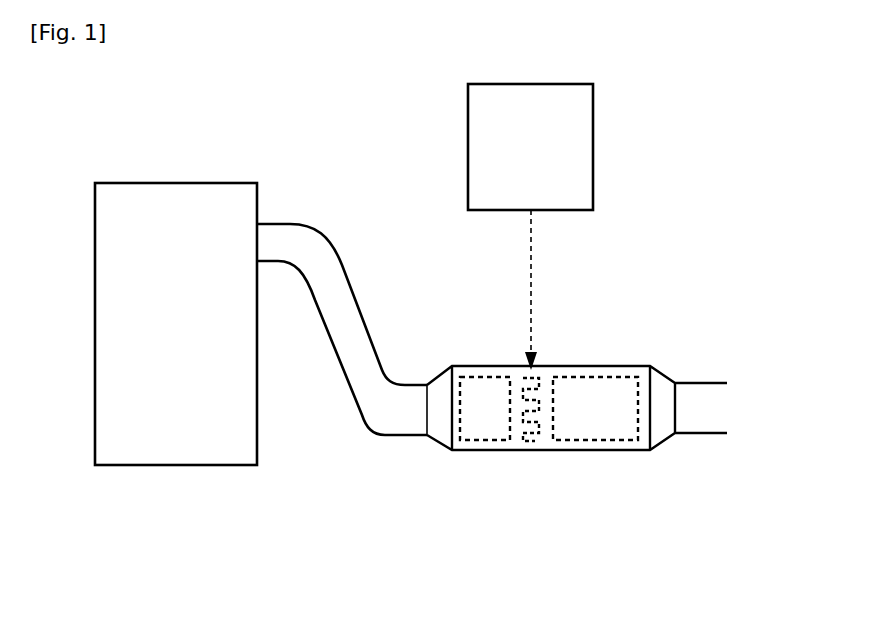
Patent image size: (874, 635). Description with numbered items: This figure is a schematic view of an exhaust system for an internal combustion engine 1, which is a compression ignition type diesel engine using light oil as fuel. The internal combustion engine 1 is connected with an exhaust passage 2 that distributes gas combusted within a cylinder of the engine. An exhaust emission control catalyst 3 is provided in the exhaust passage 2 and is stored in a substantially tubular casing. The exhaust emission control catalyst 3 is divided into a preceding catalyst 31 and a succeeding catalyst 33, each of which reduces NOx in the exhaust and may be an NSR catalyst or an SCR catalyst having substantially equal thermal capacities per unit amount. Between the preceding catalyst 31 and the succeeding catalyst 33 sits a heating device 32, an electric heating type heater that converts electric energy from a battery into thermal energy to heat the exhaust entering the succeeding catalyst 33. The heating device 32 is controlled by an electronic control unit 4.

The internal combustion engine 1 is at (177, 183).
The exhaust passage 2 is at (350, 275).
The exhaust emission control catalyst 3 is at (577, 428).
The preceding catalyst 31 is at (477, 436).
The heating device 32 is at (527, 442).
The succeeding catalyst 33 is at (612, 429).
The electronic control unit 4 is at (593, 138).